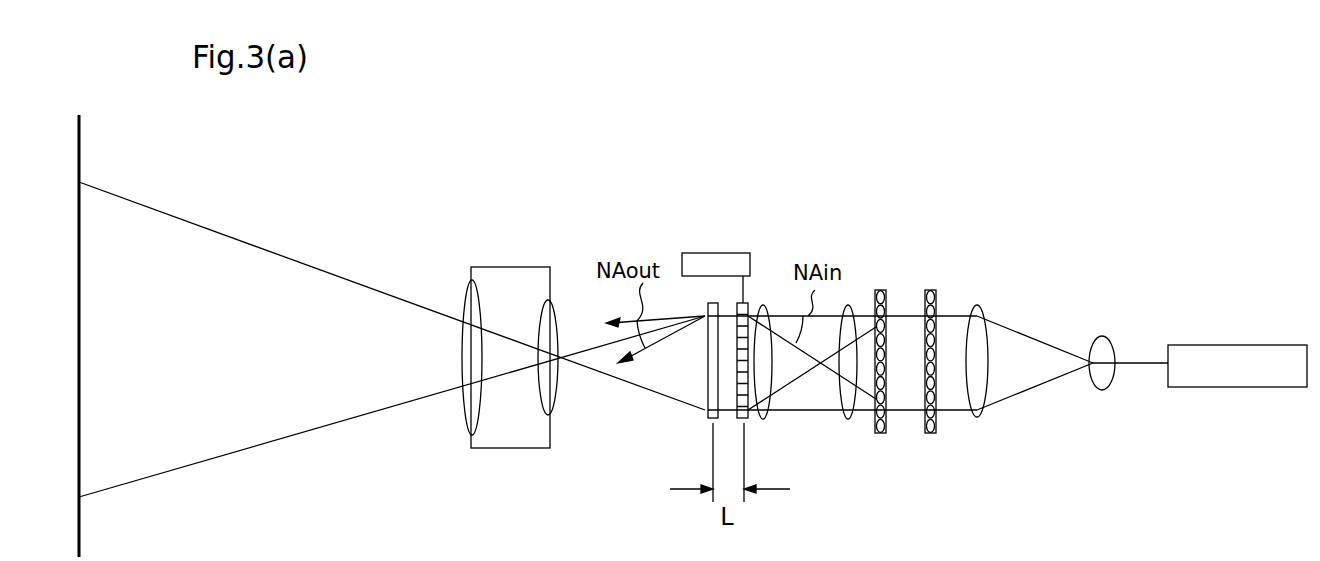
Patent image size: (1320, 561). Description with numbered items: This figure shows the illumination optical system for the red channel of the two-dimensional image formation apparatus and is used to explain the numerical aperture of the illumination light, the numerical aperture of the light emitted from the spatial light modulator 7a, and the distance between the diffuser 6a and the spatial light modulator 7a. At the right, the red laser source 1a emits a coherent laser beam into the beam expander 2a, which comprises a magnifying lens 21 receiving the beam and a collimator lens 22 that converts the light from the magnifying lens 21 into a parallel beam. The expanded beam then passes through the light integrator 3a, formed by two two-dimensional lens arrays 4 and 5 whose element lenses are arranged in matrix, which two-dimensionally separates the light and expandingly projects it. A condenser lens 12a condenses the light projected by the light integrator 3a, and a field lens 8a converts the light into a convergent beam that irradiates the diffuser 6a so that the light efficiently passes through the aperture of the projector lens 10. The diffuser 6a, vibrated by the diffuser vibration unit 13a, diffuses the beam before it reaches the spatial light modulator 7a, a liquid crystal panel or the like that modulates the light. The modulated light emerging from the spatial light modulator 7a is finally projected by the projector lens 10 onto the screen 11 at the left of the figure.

The laser source 1a is at (1200, 345).
The beam expander 2a is at (1118, 296).
The light integrator 3a is at (870, 279).
The lens array 4 is at (932, 435).
The lens array 5 is at (883, 435).
The diffuser 6a is at (745, 420).
The spatial light modulator 7a is at (706, 418).
The field lens 8a is at (764, 305).
The projector lens 10 is at (497, 267).
The screen 11 is at (82, 133).
The condenser lens 12a is at (848, 305).
The diffuser vibration unit 13a is at (698, 253).
The magnifying lens 21 is at (1100, 392).
The collimator lens 22 is at (977, 418).